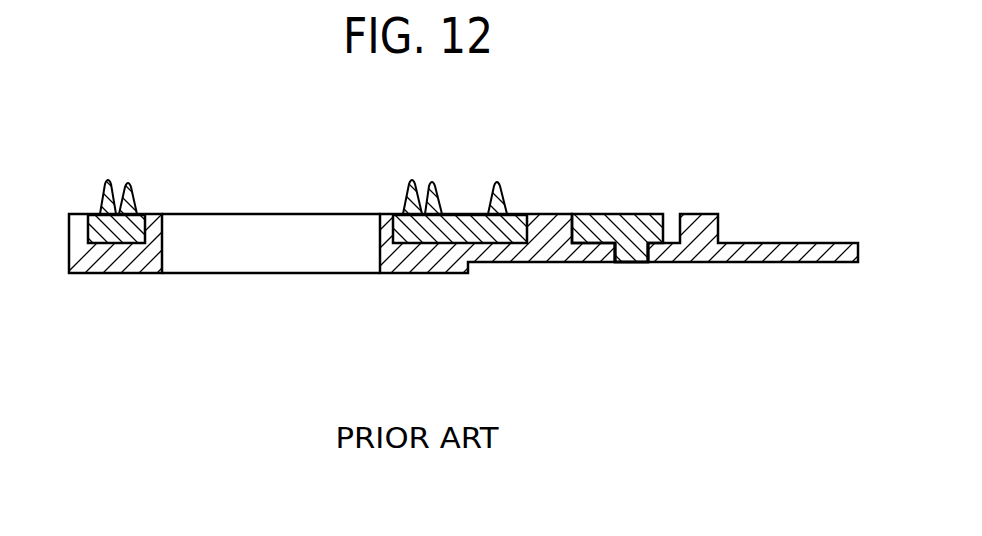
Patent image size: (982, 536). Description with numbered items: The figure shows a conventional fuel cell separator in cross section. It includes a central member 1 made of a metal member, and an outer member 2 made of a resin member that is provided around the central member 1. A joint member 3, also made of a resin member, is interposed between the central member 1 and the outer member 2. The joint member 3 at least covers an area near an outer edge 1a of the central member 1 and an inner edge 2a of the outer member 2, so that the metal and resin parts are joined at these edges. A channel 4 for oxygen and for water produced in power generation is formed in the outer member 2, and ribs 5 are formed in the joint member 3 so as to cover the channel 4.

The central member 1 is at (764, 243).
The outer edge 1a is at (640, 264).
The outer member 2 is at (111, 274).
The inner edge 2a is at (623, 264).
The joint member 3 is at (618, 214).
The channel 4 is at (257, 246).
The ribs 5 is at (110, 180).